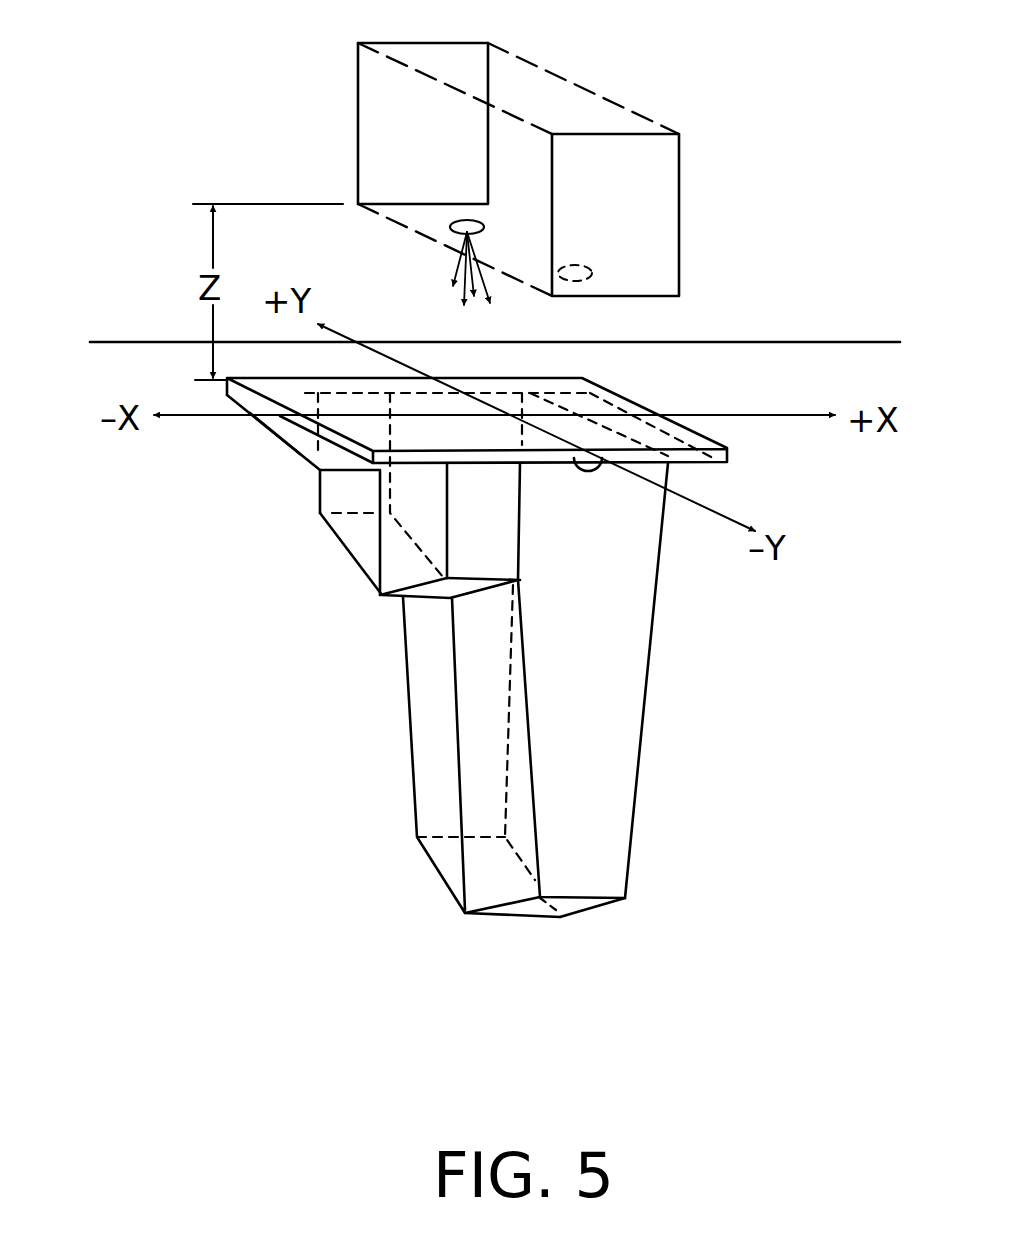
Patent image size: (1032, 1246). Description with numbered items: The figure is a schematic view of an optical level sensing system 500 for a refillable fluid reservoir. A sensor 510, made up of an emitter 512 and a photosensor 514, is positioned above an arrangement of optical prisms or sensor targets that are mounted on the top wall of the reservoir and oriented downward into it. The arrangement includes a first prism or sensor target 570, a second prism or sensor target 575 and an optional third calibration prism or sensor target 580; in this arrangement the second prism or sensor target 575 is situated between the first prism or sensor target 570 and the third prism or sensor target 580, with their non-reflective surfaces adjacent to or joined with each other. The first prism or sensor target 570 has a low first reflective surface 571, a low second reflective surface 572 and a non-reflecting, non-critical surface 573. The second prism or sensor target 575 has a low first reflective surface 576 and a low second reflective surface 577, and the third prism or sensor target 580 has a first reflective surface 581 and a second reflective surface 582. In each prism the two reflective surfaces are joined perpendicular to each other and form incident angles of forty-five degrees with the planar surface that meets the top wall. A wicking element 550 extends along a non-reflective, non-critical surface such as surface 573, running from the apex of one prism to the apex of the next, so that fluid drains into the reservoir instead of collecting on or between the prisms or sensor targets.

The sensor system 500 is at (152, 79).
The sensor 510 is at (357, 105).
The emitter 512 is at (450, 229).
The photosensor 514 is at (592, 273).
The wicking element 550 is at (380, 540).
The first prism or sensor target 570 is at (651, 730).
The low first reflective surface 571 is at (537, 903).
The low second reflective surface 572 is at (500, 882).
The non-reflecting, non-critical surface 573 is at (433, 678).
The second prism or sensor target 575 is at (349, 569).
The low first reflective surface 576 is at (452, 579).
The low second reflective surface 577 is at (345, 526).
The third prism or sensor target 580 is at (280, 437).
The first reflective surface 581 is at (360, 468).
The second reflective surface 582 is at (297, 448).